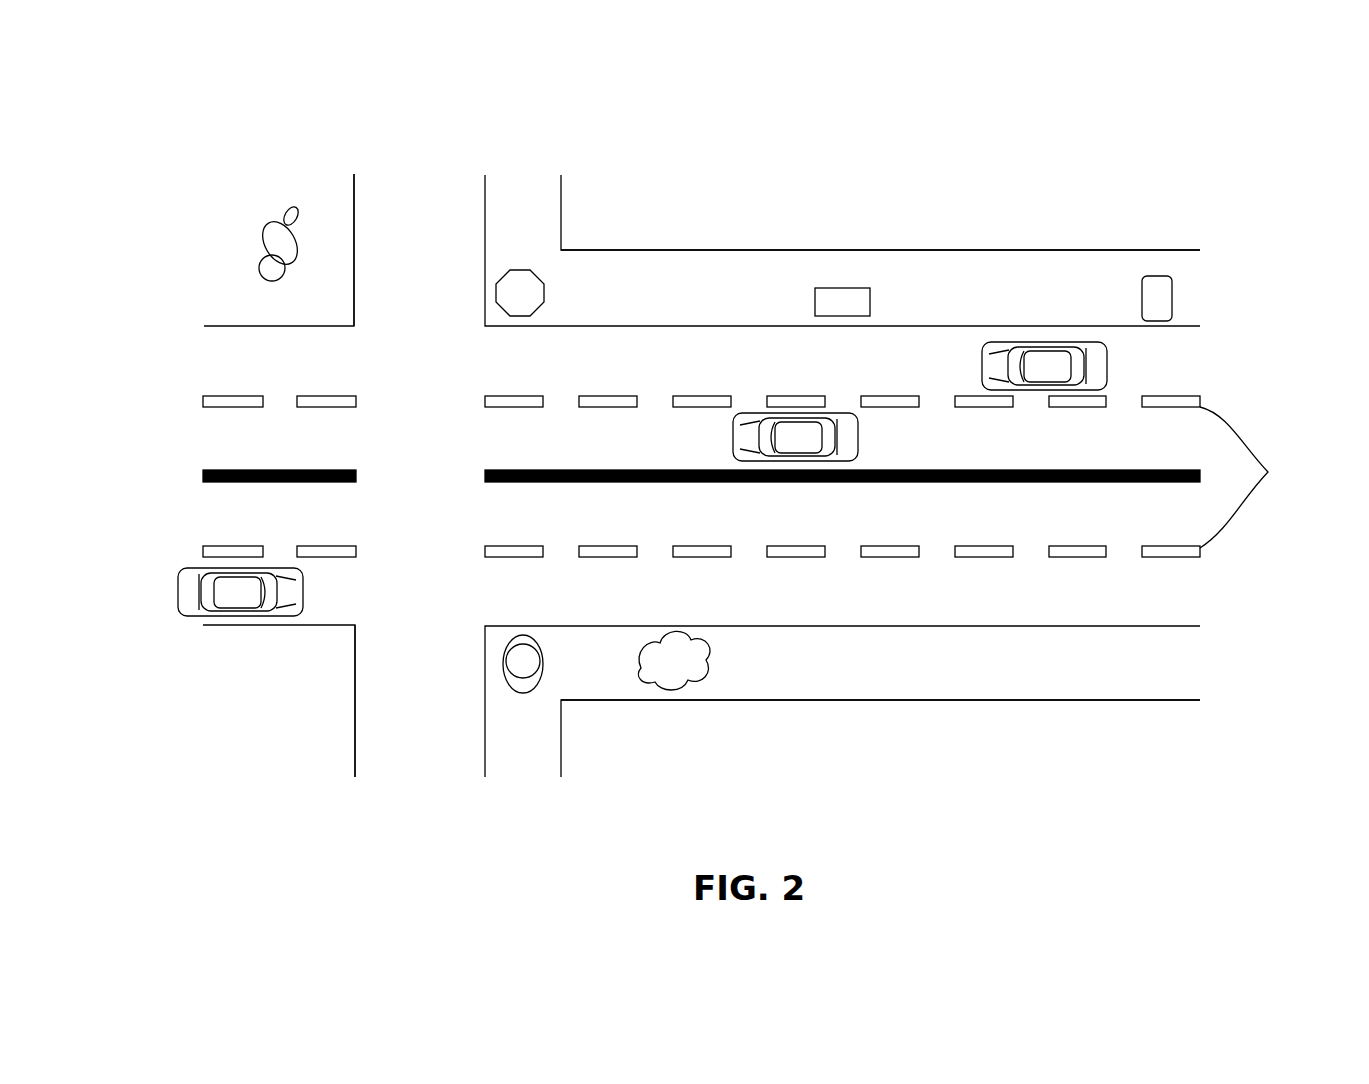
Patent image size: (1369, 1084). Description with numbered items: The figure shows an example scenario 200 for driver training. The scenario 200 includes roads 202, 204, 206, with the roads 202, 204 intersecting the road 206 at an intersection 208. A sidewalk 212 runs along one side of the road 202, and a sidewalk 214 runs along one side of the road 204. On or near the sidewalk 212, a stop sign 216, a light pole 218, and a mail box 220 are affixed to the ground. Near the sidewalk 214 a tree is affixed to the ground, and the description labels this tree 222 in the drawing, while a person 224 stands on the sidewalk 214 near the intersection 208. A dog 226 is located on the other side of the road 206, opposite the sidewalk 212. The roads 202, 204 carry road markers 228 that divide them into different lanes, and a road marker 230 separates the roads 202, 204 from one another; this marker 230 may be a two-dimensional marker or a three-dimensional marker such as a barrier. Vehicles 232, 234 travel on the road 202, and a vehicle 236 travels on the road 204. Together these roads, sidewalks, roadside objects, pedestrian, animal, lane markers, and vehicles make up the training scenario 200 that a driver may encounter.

The scenario 200 is at (866, 130).
The road 202 is at (701, 377).
The road 204 is at (701, 528).
The road 206 is at (397, 250).
The intersection 208 is at (398, 620).
The sidewalk 212 is at (1092, 249).
The sidewalk 214 is at (1048, 701).
The stop sign 216 is at (533, 270).
The light pole 218 is at (1157, 276).
The mail box 220 is at (841, 287).
The tree 222 is at (680, 693).
The person 224 is at (543, 663).
The dog 226 is at (265, 228).
The road markers 228 is at (1268, 477).
The road marker 230 is at (203, 473).
The vehicle 232 is at (763, 411).
The vehicle 234 is at (1047, 343).
The vehicle 236 is at (243, 614).